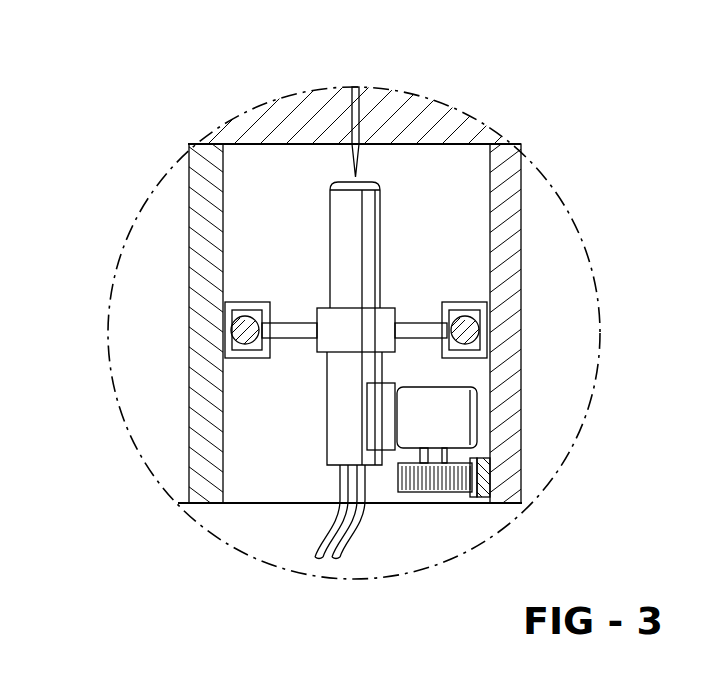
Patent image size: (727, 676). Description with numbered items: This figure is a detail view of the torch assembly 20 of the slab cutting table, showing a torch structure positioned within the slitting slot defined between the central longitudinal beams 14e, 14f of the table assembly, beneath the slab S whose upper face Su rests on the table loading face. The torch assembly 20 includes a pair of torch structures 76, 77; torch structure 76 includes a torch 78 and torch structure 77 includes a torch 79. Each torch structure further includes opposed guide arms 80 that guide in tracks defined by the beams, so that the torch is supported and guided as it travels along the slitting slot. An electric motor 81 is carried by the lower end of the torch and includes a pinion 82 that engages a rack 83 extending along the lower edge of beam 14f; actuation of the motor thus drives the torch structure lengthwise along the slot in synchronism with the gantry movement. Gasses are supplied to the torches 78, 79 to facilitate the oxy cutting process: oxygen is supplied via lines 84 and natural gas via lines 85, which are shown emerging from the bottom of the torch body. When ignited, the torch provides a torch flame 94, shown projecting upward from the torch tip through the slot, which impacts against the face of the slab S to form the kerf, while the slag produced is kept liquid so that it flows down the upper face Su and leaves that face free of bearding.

The slab S is at (250, 122).
The upper face of the slab Su is at (510, 160).
The torch assembly 20 is at (424, 176).
The central longitudinal beam 14e is at (230, 200).
The central longitudinal beam 14f is at (486, 262).
The torch structure 76 is at (303, 508).
The torch structure 77 is at (182, 474).
The torch flame 94 is at (358, 140).
The torch 78 is at (311, 313).
The torch 79 is at (333, 222).
The guide arms 80 is at (290, 328).
The electric motor 81 is at (466, 400).
The pinion 82 is at (392, 488).
The rack 83 is at (481, 495).
The lines 84 is at (336, 530).
The lines 85 is at (340, 557).